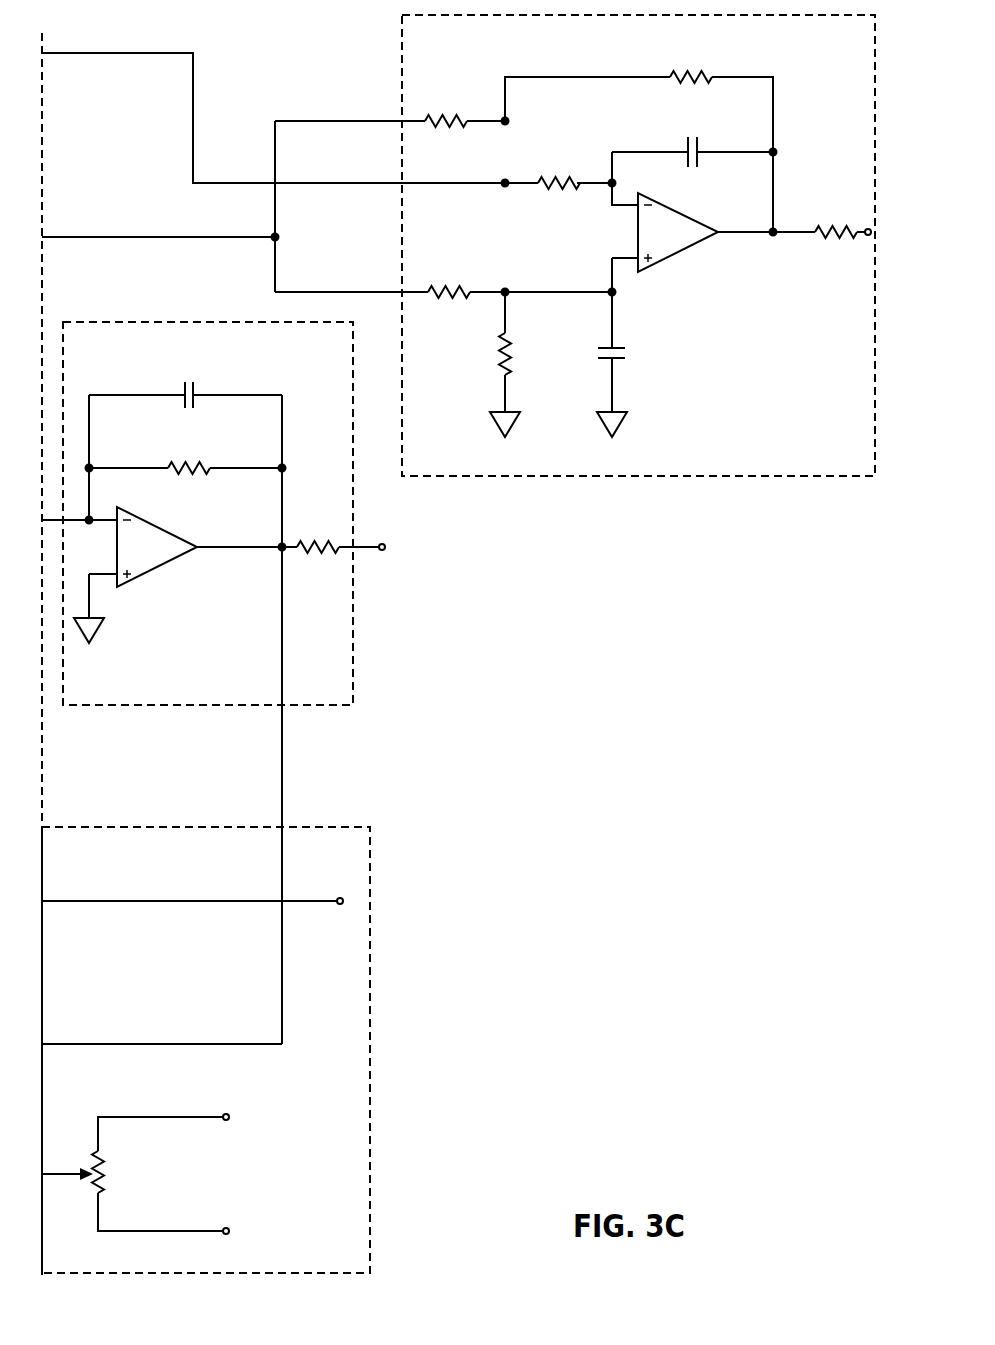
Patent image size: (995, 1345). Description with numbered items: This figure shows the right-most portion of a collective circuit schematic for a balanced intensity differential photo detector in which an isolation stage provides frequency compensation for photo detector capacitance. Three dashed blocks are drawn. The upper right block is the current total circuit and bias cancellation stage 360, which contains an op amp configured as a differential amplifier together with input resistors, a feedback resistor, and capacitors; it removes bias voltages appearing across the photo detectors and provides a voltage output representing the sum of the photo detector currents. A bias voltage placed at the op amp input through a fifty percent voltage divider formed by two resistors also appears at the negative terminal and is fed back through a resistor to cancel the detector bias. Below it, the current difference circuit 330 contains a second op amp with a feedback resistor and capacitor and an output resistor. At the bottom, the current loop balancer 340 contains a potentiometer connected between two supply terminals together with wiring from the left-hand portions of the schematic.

The current total circuit and bias cancellation stage 360 is at (386, 52).
The current difference circuit 330 is at (380, 613).
The current loop balancer 340 is at (385, 998).